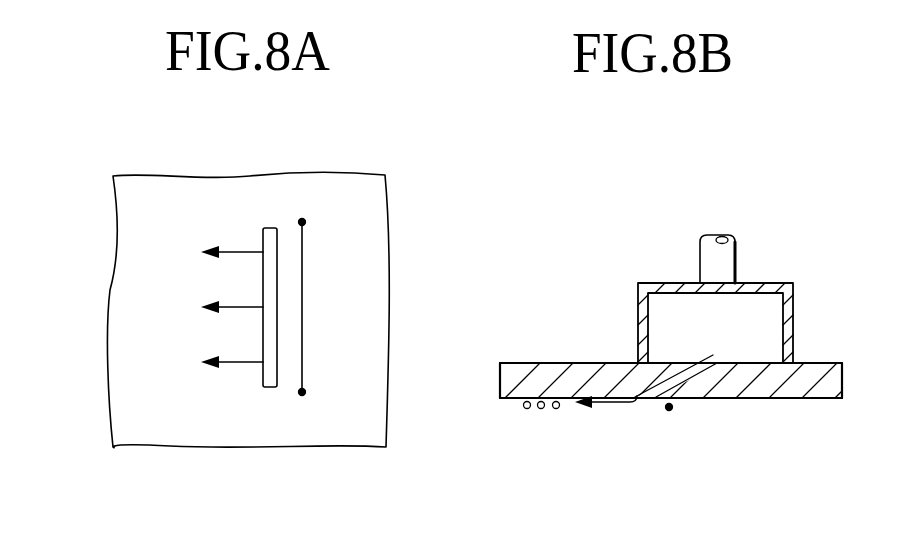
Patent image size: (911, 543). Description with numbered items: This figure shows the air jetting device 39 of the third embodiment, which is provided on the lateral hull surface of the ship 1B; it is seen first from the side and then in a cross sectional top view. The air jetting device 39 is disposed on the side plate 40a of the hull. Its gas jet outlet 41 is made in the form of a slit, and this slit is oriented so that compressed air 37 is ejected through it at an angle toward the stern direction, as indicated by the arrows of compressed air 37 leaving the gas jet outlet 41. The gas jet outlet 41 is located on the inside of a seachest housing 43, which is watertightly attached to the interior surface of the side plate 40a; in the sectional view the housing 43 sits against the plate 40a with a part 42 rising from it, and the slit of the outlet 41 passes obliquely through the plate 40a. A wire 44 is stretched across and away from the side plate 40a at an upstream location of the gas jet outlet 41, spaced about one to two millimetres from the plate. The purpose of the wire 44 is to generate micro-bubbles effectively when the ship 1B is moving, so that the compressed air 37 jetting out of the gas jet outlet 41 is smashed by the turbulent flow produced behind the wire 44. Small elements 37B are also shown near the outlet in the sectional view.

In FIG. 8A, the ship 1B is at (88, 200).
In FIG. 8B, the ship 1B is at (765, 428).
In FIG. 8A, the compressed air 37 is at (240, 252).
In FIG. 8B, the compressed air 37 is at (608, 403).
In FIG. 8B, the light emitting elements 37B is at (556, 409).
In FIG. 8A, the air jetting device 39 is at (276, 412).
In FIG. 8B, the air jetting device 39 is at (628, 268).
In FIG. 8A, the side plate 40a is at (145, 380).
In FIG. 8B, the side plate 40a is at (815, 390).
In FIG. 8A, the gas jet outlet 41 is at (268, 228).
In FIG. 8B, the gas jet outlet 41 is at (703, 366).
In FIG. 8B, the lead terminal 42 is at (725, 262).
In FIG. 8B, the seachest housing 43 is at (797, 312).
In FIG. 8A, the wire 44 is at (303, 278).
In FIG. 8B, the wire 44 is at (669, 408).